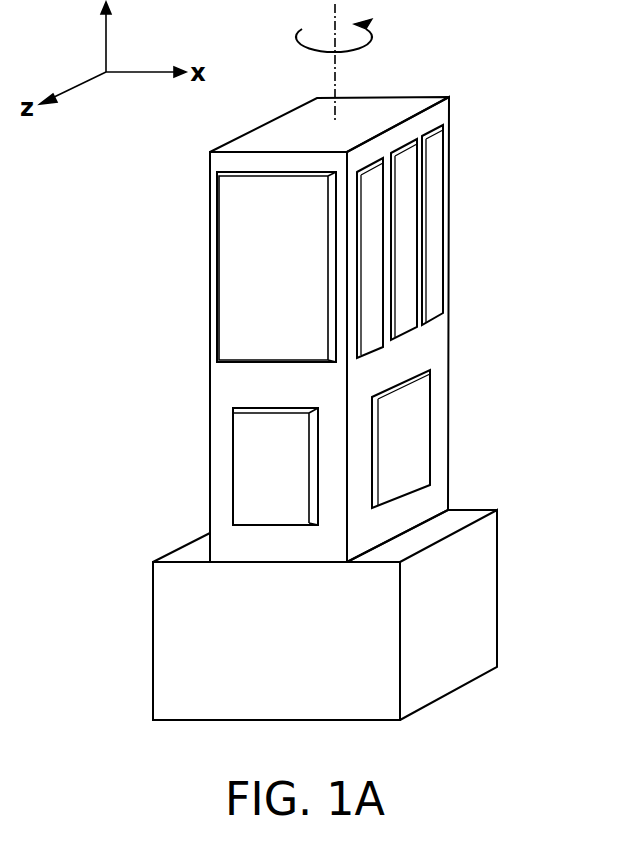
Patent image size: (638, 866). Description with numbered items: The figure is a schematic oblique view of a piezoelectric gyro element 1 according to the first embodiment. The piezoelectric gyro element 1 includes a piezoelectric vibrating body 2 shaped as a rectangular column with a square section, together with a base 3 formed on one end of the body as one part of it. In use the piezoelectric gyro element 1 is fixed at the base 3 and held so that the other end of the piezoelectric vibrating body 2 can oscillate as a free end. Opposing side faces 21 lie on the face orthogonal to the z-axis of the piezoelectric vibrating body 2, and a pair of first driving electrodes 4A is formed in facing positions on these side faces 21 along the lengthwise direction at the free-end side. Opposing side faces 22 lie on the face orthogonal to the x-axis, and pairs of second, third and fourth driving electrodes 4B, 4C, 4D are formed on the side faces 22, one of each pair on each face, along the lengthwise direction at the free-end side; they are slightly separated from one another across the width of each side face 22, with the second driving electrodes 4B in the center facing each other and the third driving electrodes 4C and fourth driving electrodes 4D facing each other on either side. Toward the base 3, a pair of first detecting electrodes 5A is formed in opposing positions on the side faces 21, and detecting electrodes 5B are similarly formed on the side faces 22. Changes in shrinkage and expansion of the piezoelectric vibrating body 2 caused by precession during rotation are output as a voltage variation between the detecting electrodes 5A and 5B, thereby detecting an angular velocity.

The piezoelectric gyro element 1 is at (530, 156).
The piezoelectric vibrating body 2 is at (209, 377).
The side faces 21 is at (220, 402).
The side faces 22 is at (432, 352).
The base 3 is at (153, 628).
The first driving electrodes 4A is at (230, 200).
The second driving electrodes 4B is at (405, 230).
The third driving electrodes 4C is at (440, 185).
The fourth driving electrodes 4D is at (372, 280).
The first detecting electrodes 5A is at (253, 448).
The second detecting electrodes 5B is at (412, 448).